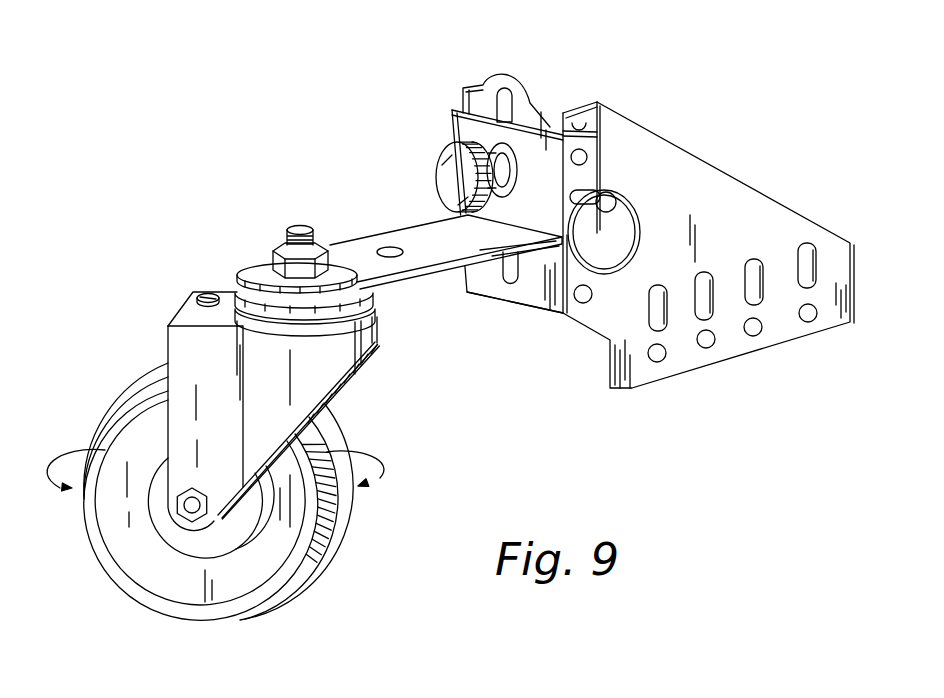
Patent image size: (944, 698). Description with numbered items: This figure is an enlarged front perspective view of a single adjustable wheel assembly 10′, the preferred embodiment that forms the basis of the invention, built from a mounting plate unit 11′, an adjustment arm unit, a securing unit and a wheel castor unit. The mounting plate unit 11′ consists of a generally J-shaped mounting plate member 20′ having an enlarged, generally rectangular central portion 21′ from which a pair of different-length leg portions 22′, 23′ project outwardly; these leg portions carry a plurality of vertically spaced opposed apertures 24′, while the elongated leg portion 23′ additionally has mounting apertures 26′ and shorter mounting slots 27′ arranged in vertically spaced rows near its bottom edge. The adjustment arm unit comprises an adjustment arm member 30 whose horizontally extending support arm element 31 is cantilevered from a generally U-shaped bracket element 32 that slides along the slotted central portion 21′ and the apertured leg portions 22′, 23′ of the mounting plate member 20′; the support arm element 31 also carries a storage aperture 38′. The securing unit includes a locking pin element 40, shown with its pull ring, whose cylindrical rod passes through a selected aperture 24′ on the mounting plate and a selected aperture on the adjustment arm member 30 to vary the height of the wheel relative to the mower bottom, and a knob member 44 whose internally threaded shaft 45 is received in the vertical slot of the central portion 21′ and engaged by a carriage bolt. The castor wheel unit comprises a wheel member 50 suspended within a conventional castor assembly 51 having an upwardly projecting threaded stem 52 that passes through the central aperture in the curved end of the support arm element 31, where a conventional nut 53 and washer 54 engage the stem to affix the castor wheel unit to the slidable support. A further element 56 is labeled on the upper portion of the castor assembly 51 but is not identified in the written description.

The adjustable wheel assembly 10′ is at (162, 178).
The mounting plate unit 11′ is at (778, 150).
The mounting plate member 20′ is at (727, 97).
The central portion 21′ is at (532, 300).
The leg portion 22′ is at (478, 87).
The elongated leg portion 23′ is at (667, 173).
The apertures 24′ is at (592, 293).
The mounting apertures 26′ is at (757, 330).
The mounting slots 27′ is at (748, 270).
The adjustment arm member 30 is at (528, 142).
The support arm element 31 is at (410, 273).
The bracket element 32 is at (556, 211).
The storage aperture 38′ is at (390, 250).
The locking pin element 40 is at (645, 220).
The knob member 44 is at (445, 168).
The internally threaded shaft 45 is at (505, 167).
The wheel member 50 is at (107, 413).
The castor assembly 51 is at (270, 438).
The threaded stem 52 is at (304, 226).
The nut 53 is at (283, 246).
The washer 54 is at (258, 268).
The fork screw 56 is at (208, 293).